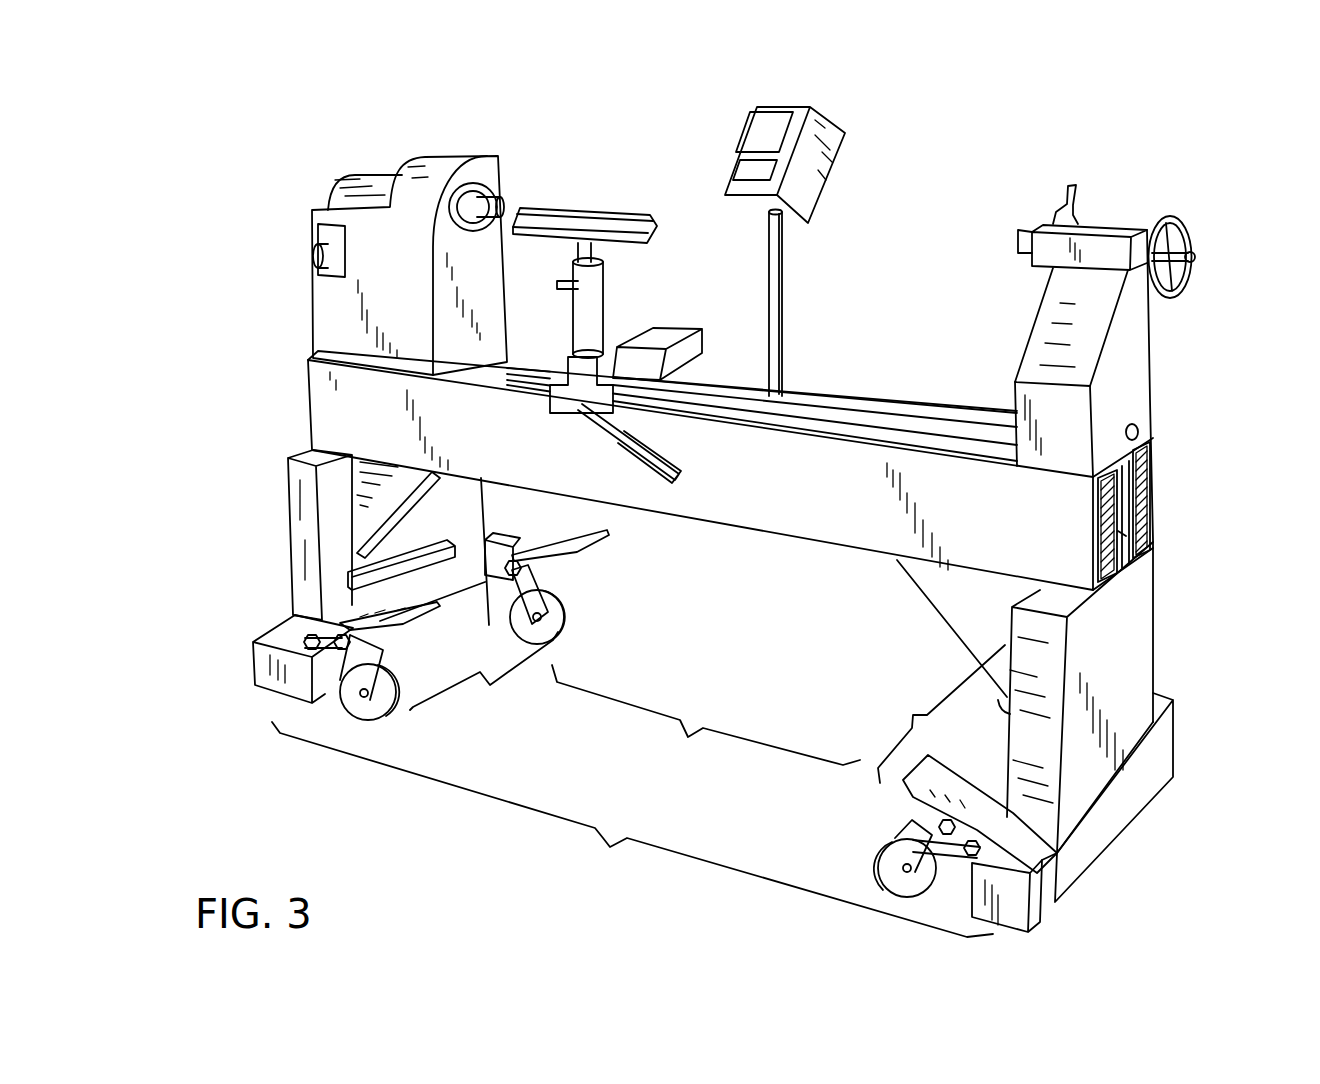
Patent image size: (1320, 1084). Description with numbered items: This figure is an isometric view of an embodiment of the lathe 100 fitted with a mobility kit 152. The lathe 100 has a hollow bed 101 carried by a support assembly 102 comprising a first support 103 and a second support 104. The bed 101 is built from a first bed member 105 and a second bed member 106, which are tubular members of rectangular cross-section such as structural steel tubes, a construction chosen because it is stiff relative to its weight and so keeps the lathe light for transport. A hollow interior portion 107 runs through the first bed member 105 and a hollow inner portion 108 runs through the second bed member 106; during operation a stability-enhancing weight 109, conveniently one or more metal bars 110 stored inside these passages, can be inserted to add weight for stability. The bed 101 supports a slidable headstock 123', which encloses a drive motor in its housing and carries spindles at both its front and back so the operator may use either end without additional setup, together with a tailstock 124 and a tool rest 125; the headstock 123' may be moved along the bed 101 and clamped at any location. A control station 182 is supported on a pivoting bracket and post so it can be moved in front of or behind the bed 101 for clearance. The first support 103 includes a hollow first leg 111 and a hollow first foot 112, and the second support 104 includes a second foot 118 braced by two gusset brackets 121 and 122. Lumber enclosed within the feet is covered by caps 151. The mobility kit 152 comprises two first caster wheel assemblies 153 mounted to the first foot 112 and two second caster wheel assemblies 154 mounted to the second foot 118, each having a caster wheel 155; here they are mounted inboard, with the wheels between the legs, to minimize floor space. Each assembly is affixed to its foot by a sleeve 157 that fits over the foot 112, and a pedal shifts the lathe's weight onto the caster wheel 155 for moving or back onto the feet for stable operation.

The lathe 100 is at (1218, 418).
The bed 101 is at (800, 515).
The support assembly 102 is at (632, 829).
The first support 103 is at (1148, 638).
The second support 104 is at (310, 507).
The first bed member 105 is at (1098, 521).
The second bed member 106 is at (1153, 472).
The hollow interior portion 107 is at (1107, 497).
The hollow inner portion 108 is at (1145, 499).
The stability-enhancing weight 109 is at (1147, 528).
The metal bars 110 is at (1107, 557).
The first leg 111 is at (1005, 637).
The first foot 112 is at (1125, 808).
The second foot 118 is at (440, 630).
The gusset bracket 121 is at (370, 528).
The gusset bracket 122 is at (450, 490).
The headstock 123' is at (409, 233).
The tailstock 124 is at (1144, 364).
The tool rest 125 is at (582, 198).
The caps 151 is at (1007, 908).
The mobility kit 152 is at (778, 714).
The first caster wheel assemblies 153 is at (898, 812).
The second caster wheel assemblies 154 is at (582, 581).
The caster wheel 155 is at (560, 617).
The sleeve 157 is at (1050, 904).
The control station 182 is at (836, 126).